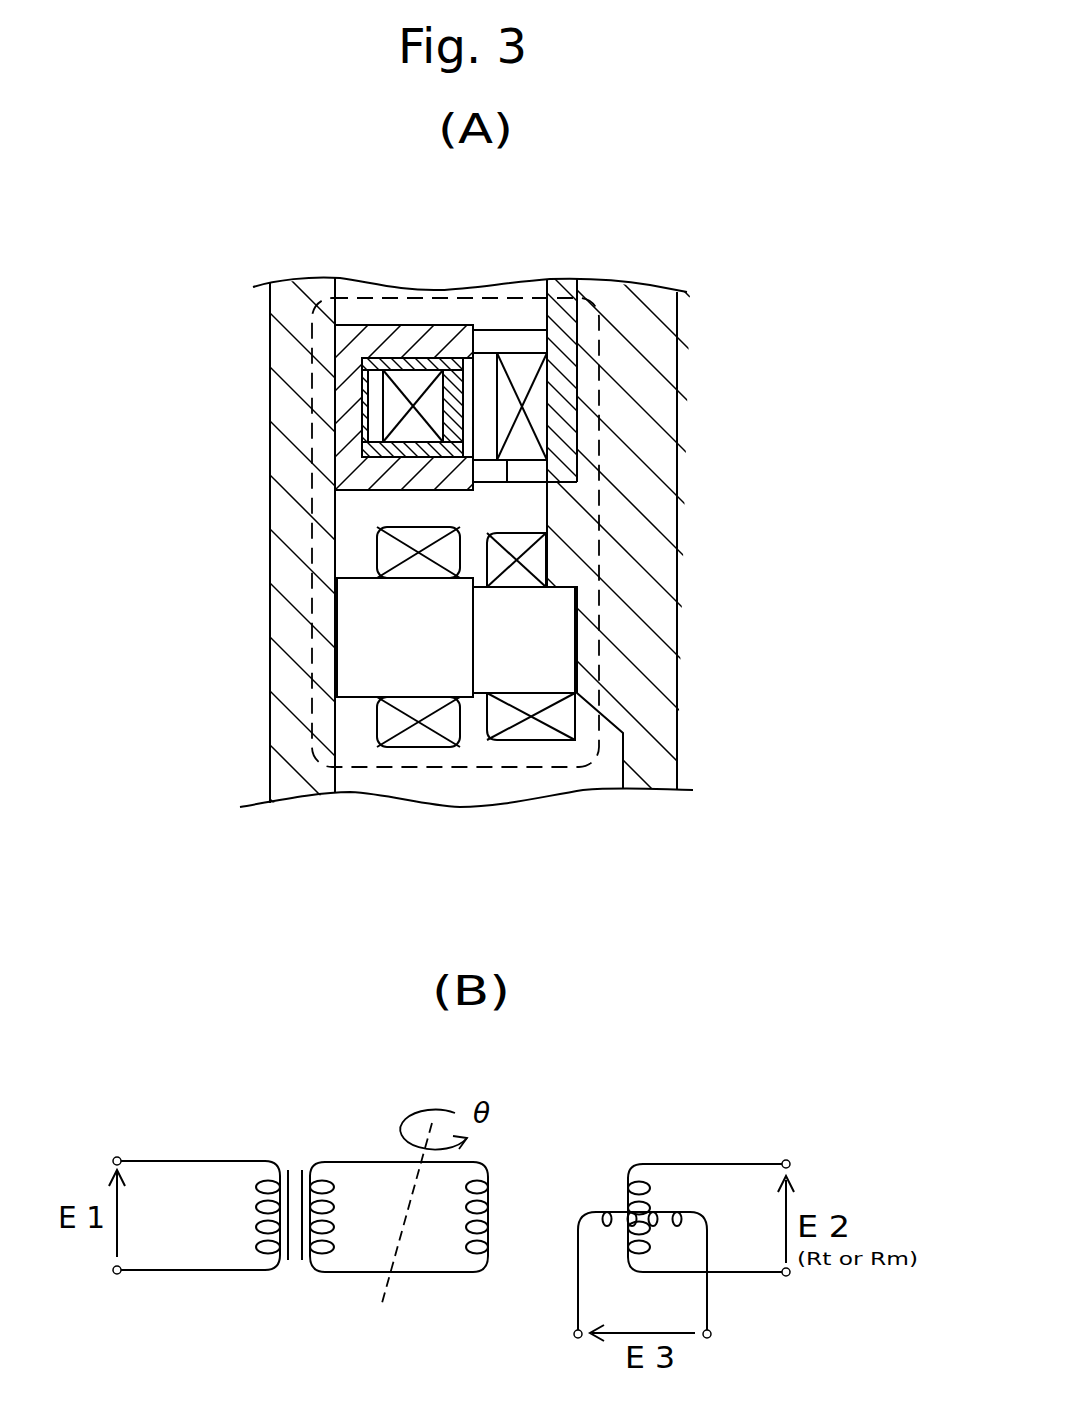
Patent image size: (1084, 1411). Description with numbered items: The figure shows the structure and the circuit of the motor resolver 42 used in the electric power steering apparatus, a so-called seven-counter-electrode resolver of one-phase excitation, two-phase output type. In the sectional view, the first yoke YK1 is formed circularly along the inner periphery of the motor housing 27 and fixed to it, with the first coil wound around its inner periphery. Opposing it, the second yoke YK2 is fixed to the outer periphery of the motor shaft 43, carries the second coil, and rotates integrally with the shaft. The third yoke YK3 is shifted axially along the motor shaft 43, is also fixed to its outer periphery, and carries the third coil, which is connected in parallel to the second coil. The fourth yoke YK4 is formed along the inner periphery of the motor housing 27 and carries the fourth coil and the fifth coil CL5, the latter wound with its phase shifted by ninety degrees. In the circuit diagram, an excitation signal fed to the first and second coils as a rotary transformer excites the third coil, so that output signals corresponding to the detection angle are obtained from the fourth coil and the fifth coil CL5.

The motor housing 27 is at (270, 541).
The motor resolver 42 is at (600, 363).
The motor shaft 43 is at (657, 463).
The first yoke YK1 is at (379, 325).
The second yoke YK2 is at (555, 333).
The third yoke YK3 is at (547, 677).
The fourth yoke YK4 is at (365, 678).
The fifth coil CL5 is at (614, 1264).